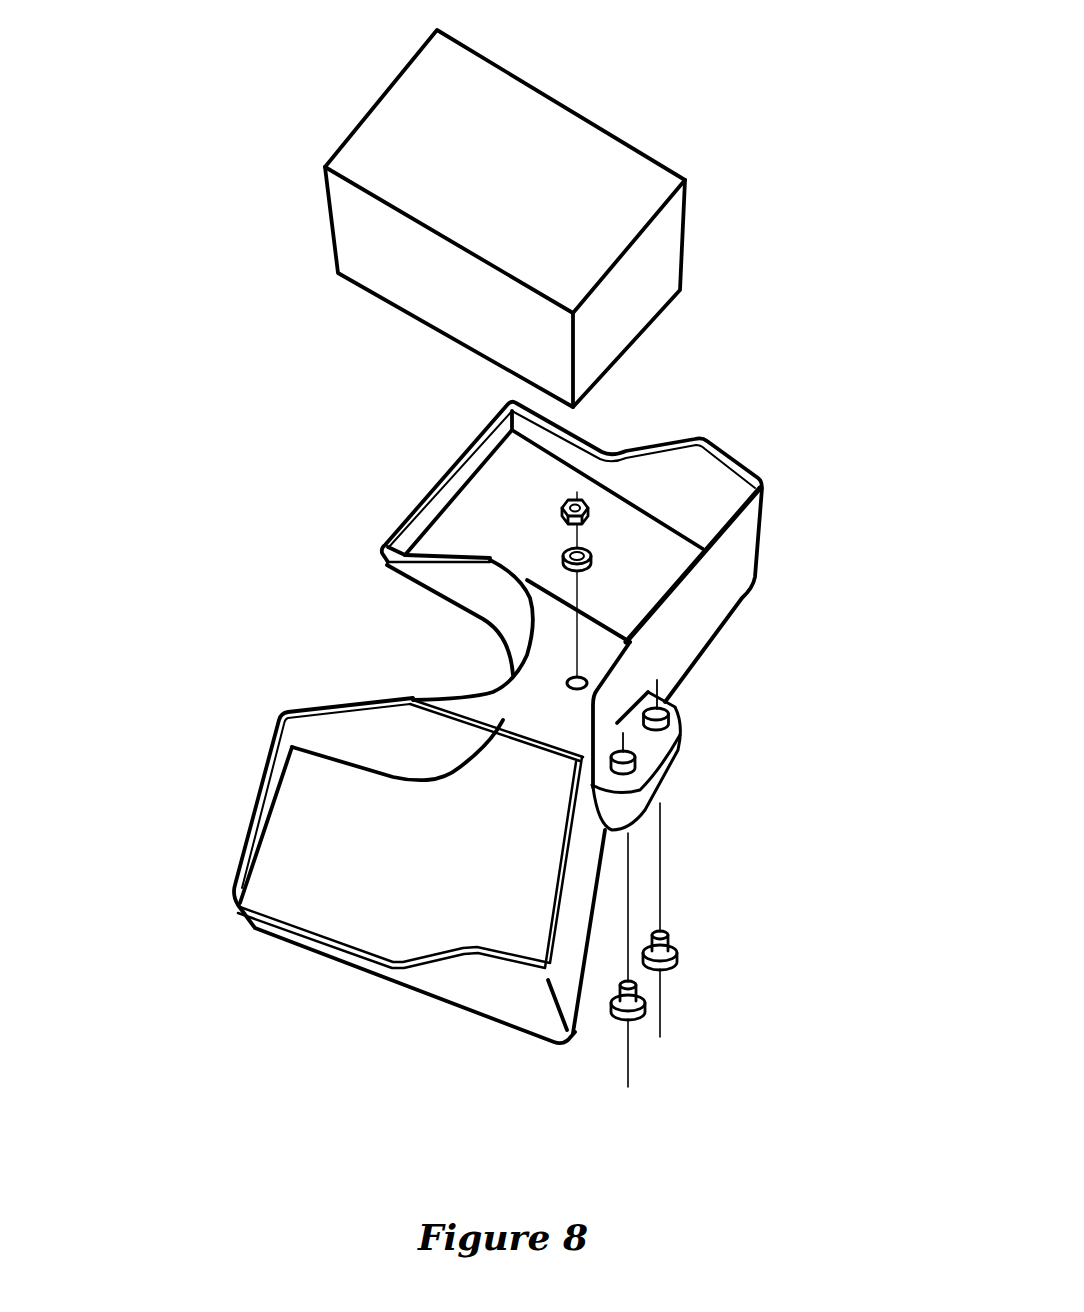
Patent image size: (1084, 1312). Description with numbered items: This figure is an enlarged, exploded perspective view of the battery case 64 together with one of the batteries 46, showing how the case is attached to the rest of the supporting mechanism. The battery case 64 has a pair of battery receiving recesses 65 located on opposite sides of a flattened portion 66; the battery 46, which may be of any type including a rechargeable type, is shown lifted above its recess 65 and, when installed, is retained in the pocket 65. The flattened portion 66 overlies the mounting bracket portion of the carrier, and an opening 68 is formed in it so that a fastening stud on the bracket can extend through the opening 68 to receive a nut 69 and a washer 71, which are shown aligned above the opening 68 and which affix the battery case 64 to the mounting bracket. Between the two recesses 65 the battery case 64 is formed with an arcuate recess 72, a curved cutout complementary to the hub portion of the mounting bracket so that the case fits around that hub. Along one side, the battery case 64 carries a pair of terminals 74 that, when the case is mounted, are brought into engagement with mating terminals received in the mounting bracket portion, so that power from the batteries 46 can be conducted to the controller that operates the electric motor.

The battery 46 is at (393, 105).
The battery case 64 is at (410, 1002).
The battery receiving recess 65 is at (472, 502).
The flattened portion 66 is at (540, 720).
The opening 68 is at (572, 675).
The nut 69 is at (587, 507).
The washer 71 is at (590, 557).
The arcuate recess 72 is at (487, 682).
The terminal 74 is at (673, 710).